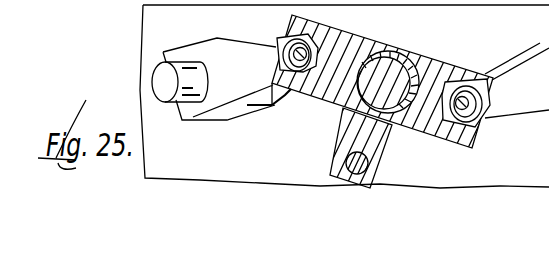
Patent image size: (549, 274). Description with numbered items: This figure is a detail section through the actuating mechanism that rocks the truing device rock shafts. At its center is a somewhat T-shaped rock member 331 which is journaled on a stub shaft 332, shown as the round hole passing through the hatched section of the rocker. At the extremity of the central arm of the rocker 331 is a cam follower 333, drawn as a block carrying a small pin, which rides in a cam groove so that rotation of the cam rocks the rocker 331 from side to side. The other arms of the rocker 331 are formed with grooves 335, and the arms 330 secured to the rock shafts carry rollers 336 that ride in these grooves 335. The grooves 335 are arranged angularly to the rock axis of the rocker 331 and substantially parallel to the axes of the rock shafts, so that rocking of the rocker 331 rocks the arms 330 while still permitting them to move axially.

The arm 330 is at (207, 108).
The rock member 331 is at (422, 55).
The stub shaft 332 is at (377, 90).
The cam follower 333 is at (368, 168).
The groove 335 is at (322, 38).
The roller 336 is at (280, 37).